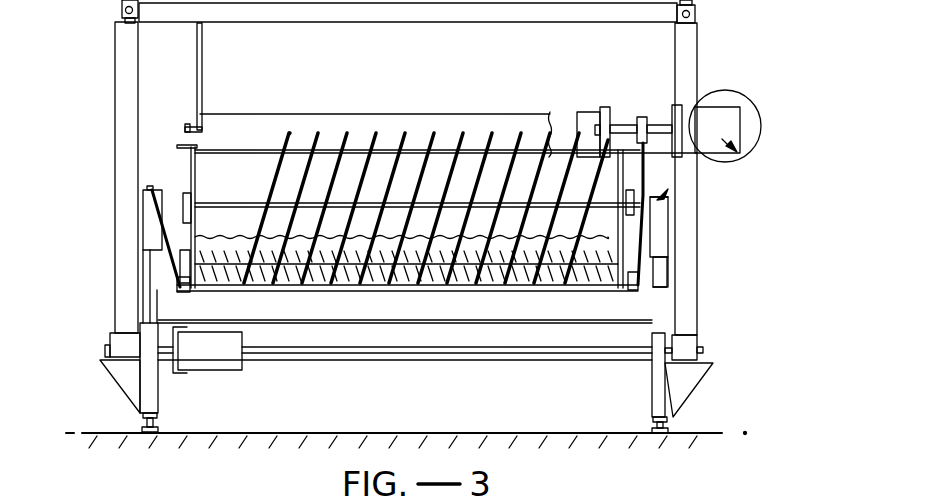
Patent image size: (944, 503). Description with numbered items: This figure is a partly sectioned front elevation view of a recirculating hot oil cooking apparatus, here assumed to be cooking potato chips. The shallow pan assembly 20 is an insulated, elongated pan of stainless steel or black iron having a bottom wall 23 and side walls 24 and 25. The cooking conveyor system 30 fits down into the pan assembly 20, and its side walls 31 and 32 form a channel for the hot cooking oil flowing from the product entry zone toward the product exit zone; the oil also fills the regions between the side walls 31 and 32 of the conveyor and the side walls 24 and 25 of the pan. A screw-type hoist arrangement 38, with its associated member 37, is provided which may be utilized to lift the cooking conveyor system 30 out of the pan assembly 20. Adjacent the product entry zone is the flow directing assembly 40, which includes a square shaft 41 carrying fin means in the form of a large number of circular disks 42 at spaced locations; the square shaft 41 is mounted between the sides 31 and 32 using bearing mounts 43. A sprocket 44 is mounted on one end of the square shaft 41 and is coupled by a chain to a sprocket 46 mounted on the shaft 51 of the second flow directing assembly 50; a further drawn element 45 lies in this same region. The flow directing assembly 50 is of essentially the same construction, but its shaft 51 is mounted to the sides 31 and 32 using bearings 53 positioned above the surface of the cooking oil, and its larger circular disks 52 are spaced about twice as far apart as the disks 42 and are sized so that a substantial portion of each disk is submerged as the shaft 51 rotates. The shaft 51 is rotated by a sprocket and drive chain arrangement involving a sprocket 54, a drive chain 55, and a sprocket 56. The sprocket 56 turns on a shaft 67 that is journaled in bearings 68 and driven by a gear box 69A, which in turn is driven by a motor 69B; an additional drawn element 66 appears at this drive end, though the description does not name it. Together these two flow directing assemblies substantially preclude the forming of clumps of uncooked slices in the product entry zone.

The pan assembly 20 is at (483, 333).
The bottom wall 23 is at (436, 283).
The side wall 24 is at (172, 258).
The side wall 25 is at (668, 240).
The cooking conveyor system 30 is at (207, 155).
The side wall 31 is at (198, 178).
The side wall 32 is at (614, 187).
The top beam 37 is at (700, 58).
The screw-type hoist arrangement 38 is at (708, 55).
The flow directing assembly 40 is at (383, 295).
The square shaft 41 is at (395, 268).
The circular disks 42 is at (431, 272).
The bearing mounts 43 is at (200, 279).
The sprocket 44 is at (660, 280).
The side plate 45 is at (668, 256).
The sprocket 46 is at (648, 224).
The flow directing assembly 50 is at (402, 163).
The shaft 51 is at (412, 202).
The circular disks 52 is at (505, 143).
The bearings 53 is at (183, 203).
The sprocket 54 is at (668, 208).
The drive chain 55 is at (647, 172).
The sprocket 56 is at (639, 125).
The shaft 66 is at (655, 115).
The shaft 67 is at (679, 105).
The bearings 68 is at (607, 107).
The gear box 69A is at (745, 156).
The motor 69B is at (753, 130).